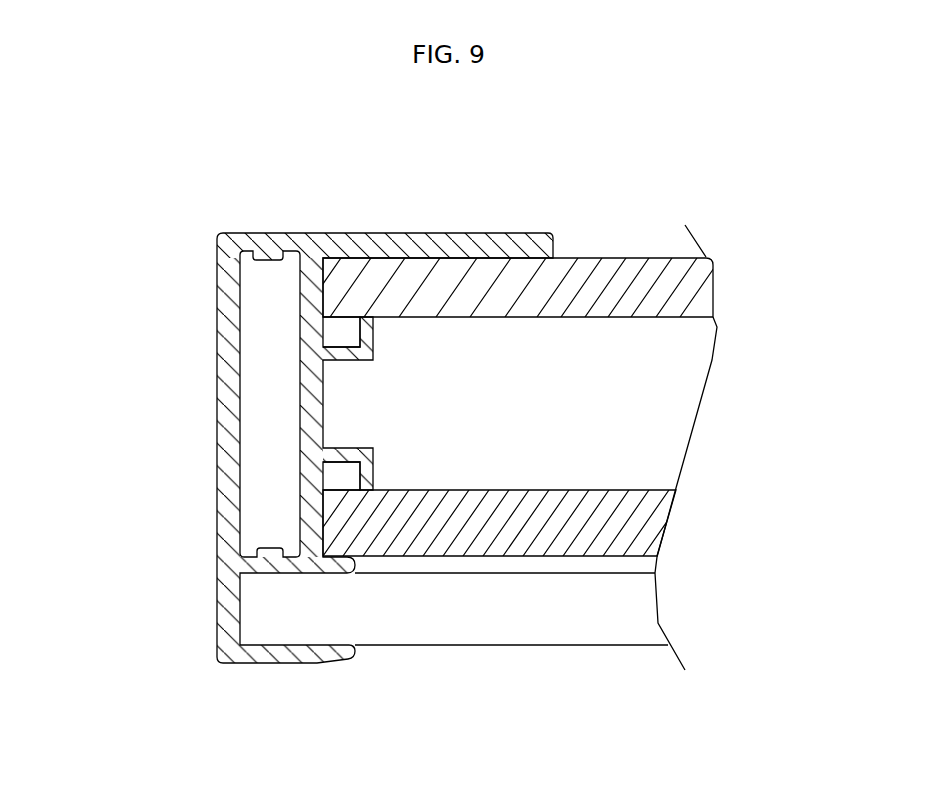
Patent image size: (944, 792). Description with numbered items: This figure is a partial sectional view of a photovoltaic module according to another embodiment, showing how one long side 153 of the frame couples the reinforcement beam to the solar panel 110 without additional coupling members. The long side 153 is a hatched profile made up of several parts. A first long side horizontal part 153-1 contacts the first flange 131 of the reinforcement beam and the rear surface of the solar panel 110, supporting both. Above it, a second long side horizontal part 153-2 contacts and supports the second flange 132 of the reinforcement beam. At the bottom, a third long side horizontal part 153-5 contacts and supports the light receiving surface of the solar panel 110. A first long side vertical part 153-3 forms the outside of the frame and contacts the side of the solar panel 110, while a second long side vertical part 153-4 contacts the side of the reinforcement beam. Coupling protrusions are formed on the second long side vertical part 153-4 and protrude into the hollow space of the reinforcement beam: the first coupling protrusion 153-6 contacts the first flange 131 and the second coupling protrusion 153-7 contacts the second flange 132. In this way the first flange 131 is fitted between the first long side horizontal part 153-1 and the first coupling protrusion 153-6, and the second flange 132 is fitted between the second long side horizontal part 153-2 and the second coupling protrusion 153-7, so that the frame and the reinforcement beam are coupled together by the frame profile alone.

The long side 153 is at (210, 217).
The first long side horizontal part 153-1 is at (327, 573).
The second long side horizontal part 153-2 is at (472, 247).
The first long side vertical part 153-3 is at (233, 409).
The second long side vertical part 153-4 is at (310, 355).
The third long side horizontal part 153-5 is at (293, 655).
The first coupling protrusion 153-6 is at (373, 452).
The second coupling protrusion 153-7 is at (364, 353).
The second flange 132 is at (662, 288).
The first flange 131 is at (600, 528).
The solar panel 110 is at (607, 607).